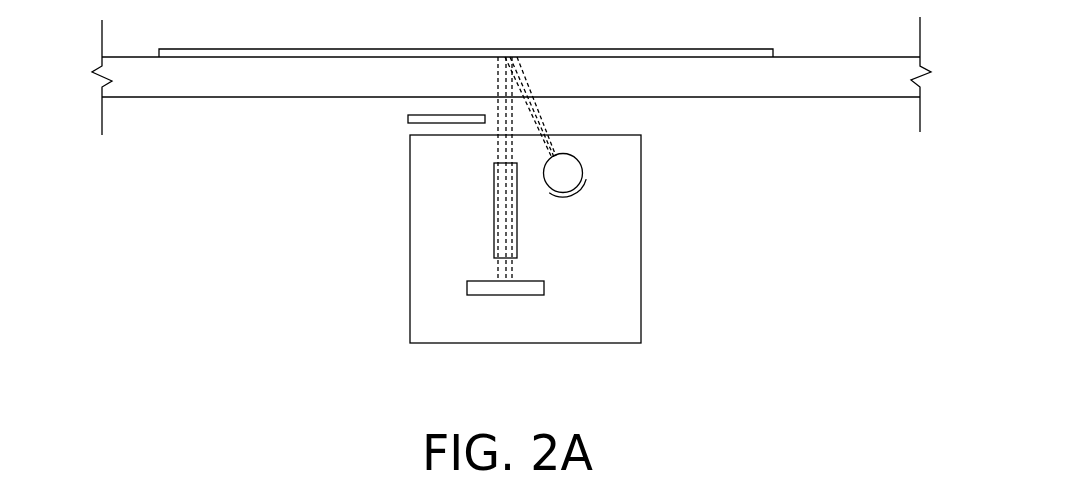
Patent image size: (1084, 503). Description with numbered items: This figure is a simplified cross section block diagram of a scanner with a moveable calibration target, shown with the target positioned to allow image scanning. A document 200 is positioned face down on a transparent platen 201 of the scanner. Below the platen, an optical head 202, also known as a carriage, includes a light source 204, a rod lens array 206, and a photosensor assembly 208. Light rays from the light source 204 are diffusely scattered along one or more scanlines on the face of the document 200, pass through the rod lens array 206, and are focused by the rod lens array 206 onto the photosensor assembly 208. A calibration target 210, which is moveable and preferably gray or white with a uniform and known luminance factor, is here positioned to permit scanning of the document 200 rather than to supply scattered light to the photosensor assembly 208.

The document 200 is at (660, 48).
The transparent platen 201 is at (818, 57).
The optical head 202 is at (523, 343).
The light source 204 is at (568, 155).
The rod lens array 206 is at (494, 210).
The photosensor assembly 208 is at (533, 295).
The calibration target 210 is at (408, 120).